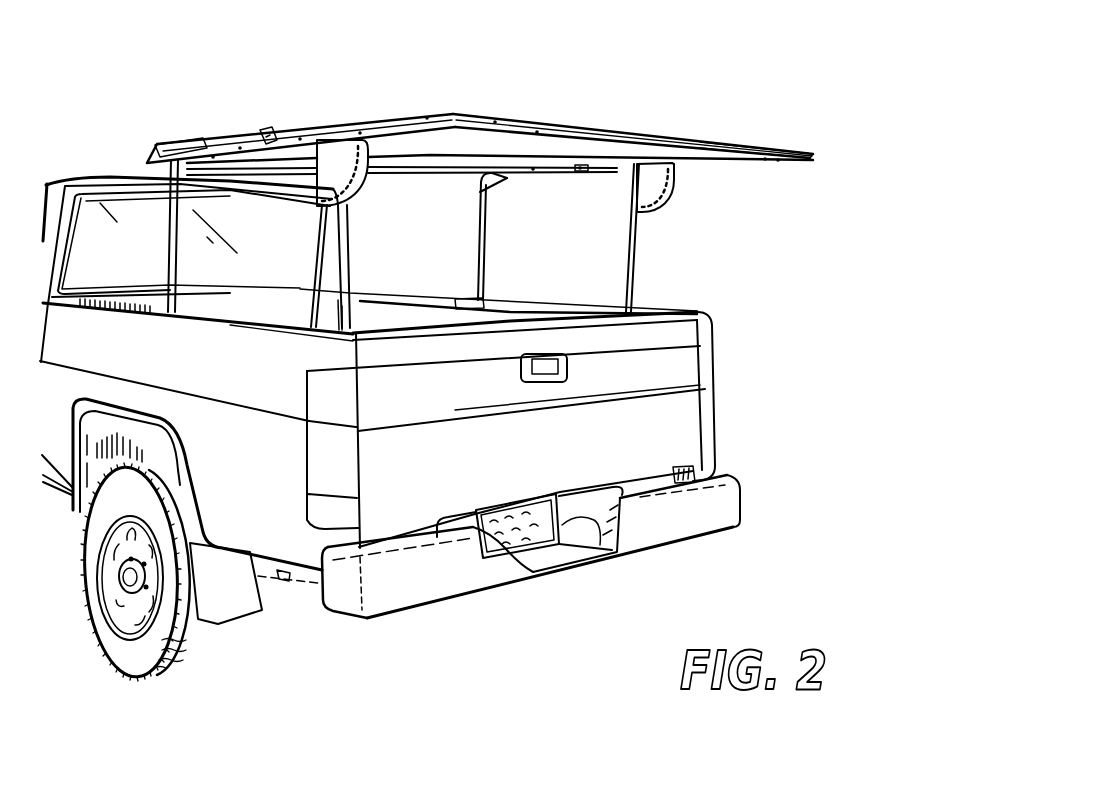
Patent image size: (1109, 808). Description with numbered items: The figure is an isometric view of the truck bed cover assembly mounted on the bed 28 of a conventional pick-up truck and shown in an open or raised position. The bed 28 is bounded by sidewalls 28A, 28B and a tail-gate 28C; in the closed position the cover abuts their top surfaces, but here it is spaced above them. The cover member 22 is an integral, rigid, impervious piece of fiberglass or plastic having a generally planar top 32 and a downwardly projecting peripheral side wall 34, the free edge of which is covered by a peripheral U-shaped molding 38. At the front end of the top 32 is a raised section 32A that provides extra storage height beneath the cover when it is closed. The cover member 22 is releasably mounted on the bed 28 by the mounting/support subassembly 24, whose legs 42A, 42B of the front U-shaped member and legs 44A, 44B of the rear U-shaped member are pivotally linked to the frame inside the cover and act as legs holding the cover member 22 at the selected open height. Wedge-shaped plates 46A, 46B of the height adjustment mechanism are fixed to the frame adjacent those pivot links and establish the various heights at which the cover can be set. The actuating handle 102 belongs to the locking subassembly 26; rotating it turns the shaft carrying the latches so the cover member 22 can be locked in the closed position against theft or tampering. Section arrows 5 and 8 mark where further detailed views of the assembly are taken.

The cover member 22 is at (465, 103).
The mounting/support subassembly 24 is at (642, 274).
The locking subassembly 26 is at (271, 133).
The bed 28 is at (379, 316).
The sidewall 28A is at (163, 368).
The sidewall 28B is at (707, 412).
The tail-gate 28C is at (663, 437).
The top 32 is at (523, 140).
The raised section 32A is at (173, 141).
The peripheral side wall 34 is at (385, 117).
The peripheral U-shaped molding 38 is at (737, 147).
The leg 42A is at (170, 248).
The leg 42B is at (483, 243).
The leg 44A is at (313, 248).
The leg 44B is at (640, 230).
The wedge-shaped plate 46A is at (330, 173).
The wedge-shaped plate 46B is at (653, 177).
The actuating handle 102 is at (266, 132).
The section line 5- 5 is at (370, 190).
The section line 8- 8 is at (637, 93).